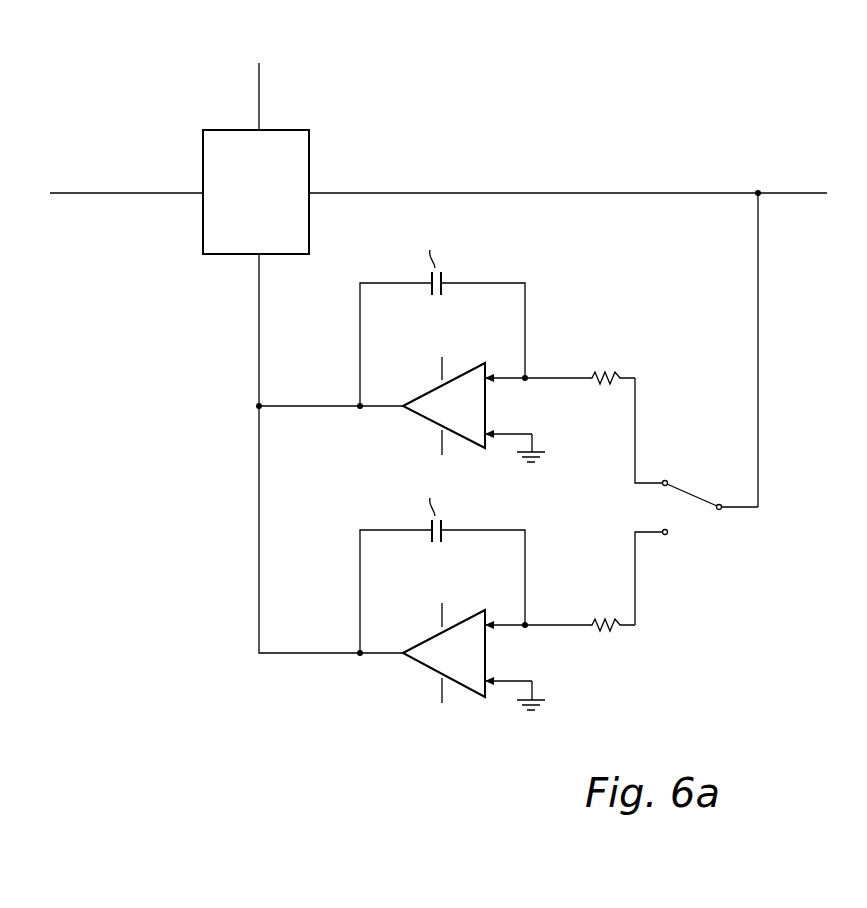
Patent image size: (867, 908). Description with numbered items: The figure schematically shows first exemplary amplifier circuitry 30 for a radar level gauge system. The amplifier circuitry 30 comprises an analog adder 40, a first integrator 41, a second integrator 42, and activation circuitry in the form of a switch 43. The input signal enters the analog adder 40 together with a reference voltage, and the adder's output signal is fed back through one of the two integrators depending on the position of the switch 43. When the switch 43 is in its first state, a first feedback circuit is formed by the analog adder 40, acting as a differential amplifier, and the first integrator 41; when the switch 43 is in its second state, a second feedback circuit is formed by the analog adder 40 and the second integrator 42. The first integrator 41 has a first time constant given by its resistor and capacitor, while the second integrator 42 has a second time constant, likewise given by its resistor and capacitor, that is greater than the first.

The amplifier circuitry 30 is at (423, 110).
The analog adder 40 is at (300, 105).
The first integrator 41 is at (547, 318).
The second integrator 42 is at (450, 740).
The switch 43 is at (690, 460).